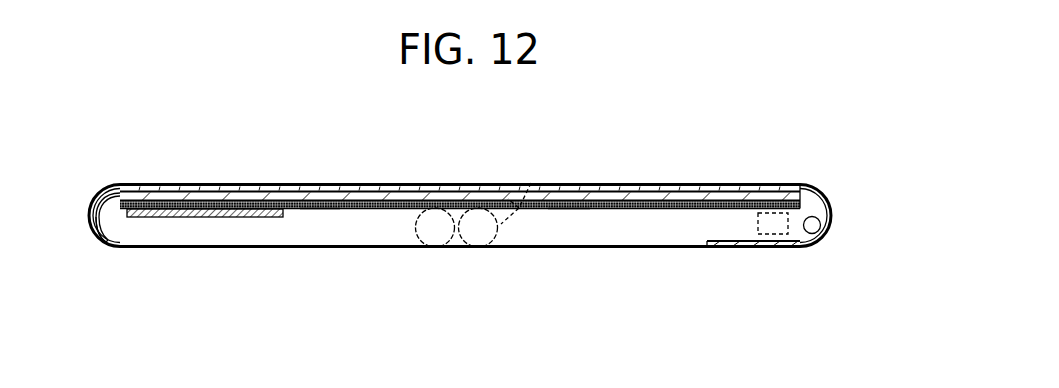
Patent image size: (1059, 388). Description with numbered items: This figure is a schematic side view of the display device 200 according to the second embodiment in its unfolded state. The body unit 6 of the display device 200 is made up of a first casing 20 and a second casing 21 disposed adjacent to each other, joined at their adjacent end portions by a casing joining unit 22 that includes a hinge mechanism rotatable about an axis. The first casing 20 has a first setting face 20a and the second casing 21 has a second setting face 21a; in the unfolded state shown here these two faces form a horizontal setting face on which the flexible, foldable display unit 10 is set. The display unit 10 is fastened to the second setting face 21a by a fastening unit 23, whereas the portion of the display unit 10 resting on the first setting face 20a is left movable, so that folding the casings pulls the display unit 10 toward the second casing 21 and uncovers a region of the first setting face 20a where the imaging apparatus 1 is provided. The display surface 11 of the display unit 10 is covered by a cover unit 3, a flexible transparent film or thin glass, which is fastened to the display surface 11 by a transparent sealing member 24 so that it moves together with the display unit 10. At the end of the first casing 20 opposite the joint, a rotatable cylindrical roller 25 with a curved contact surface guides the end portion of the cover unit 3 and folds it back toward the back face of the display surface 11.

The display device 200 is at (808, 158).
The cover unit 3 is at (114, 186).
The transparent sealing member 24 is at (117, 196).
The display unit 10 is at (97, 208).
The display surface 11 is at (464, 182).
The casing joining unit 22 is at (531, 183).
The fastening unit 23 is at (205, 218).
The second setting face 21a is at (322, 210).
The second casing 21 is at (400, 248).
The first casing 20 is at (500, 248).
The body unit 6 is at (520, 338).
The first setting face 20a is at (568, 210).
The roller 25 is at (819, 223).
The imaging apparatus 1 is at (788, 216).